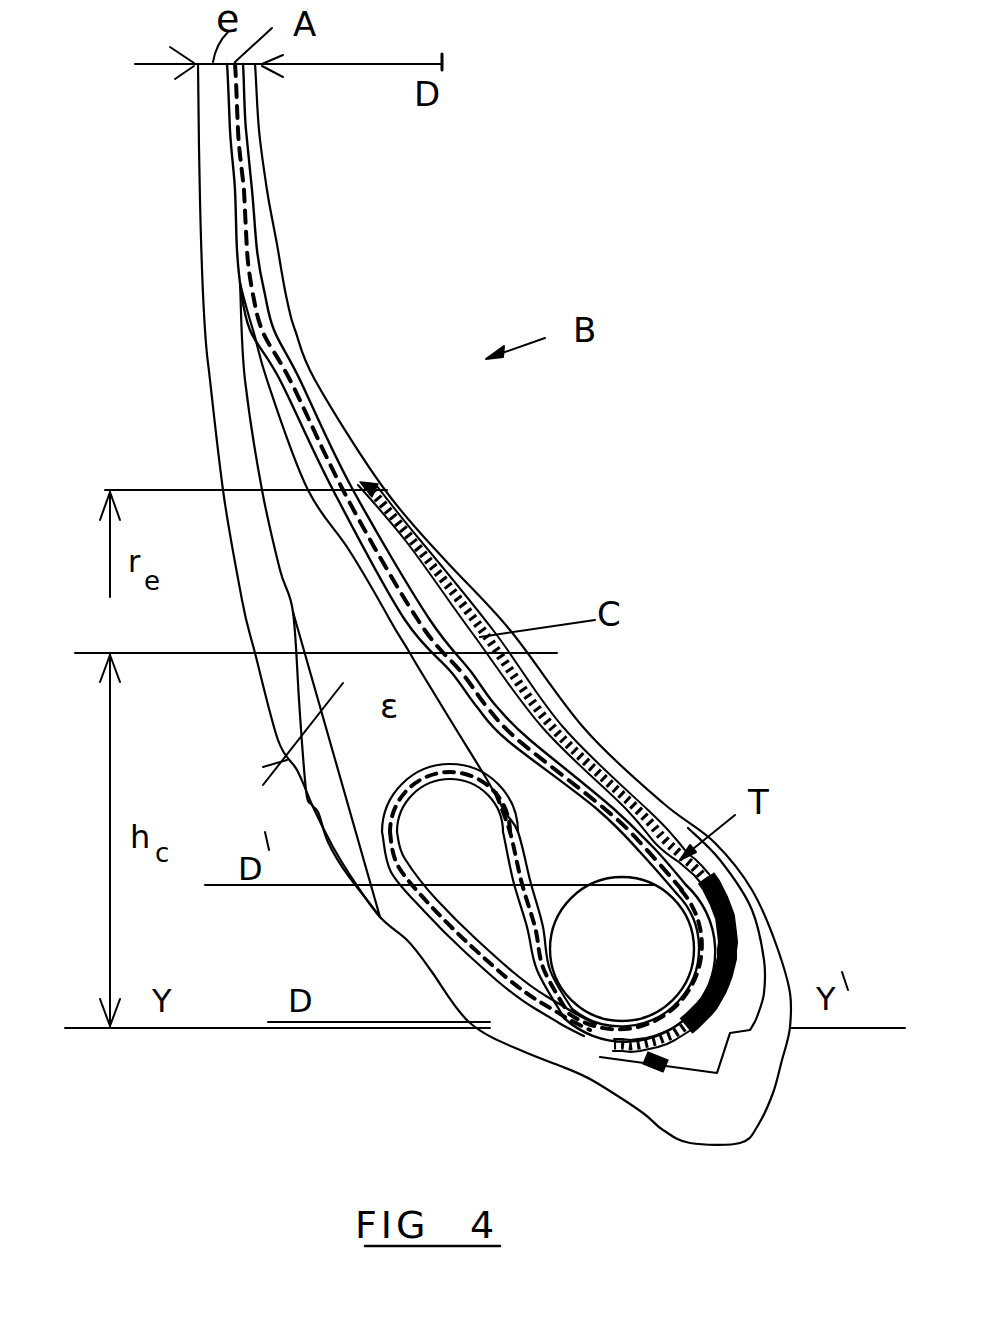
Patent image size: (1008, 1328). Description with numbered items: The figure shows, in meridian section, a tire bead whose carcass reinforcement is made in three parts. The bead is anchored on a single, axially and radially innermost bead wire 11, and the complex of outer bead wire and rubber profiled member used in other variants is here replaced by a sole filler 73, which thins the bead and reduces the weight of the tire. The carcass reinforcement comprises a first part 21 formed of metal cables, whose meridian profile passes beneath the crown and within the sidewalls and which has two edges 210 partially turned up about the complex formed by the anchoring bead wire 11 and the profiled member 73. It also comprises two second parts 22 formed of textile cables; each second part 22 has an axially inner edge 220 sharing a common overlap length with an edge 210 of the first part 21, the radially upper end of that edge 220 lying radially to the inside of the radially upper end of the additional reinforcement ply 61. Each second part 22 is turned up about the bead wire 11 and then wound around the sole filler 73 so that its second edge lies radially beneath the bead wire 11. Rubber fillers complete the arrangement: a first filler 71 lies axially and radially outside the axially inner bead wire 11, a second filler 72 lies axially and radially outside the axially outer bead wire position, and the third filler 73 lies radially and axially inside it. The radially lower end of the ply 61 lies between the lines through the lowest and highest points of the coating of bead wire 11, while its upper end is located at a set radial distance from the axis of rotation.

The first bead wire 11 is at (622, 949).
The first part of the carcass reinforcement 21 is at (277, 318).
The second parts of the carcass reinforcement 22 is at (617, 830).
The additional reinforcement ply 61 is at (567, 740).
The first filler 71 is at (398, 645).
The second filler 72 is at (343, 680).
The sole filler 73 is at (483, 934).
The edges of the first part 210 is at (658, 1063).
The axially inner edge of the second part 220 is at (445, 640).